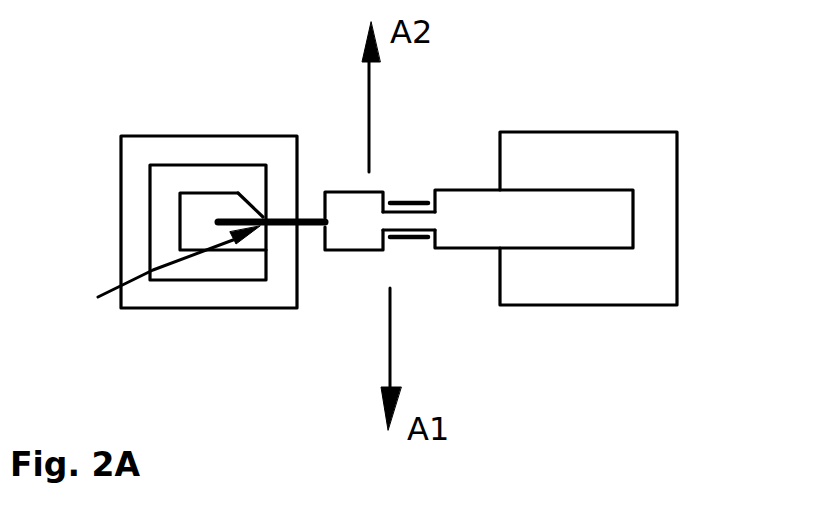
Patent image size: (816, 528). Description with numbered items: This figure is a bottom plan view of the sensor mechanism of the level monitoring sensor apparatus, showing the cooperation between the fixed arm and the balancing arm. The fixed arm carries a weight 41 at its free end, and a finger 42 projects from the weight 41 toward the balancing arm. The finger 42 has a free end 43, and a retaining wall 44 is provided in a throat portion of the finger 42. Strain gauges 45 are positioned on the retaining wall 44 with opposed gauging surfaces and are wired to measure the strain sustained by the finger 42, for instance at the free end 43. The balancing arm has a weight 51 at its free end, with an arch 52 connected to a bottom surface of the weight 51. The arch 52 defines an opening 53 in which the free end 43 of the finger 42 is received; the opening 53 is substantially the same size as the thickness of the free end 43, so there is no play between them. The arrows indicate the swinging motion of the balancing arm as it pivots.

The weight 41 is at (578, 153).
The finger 42 is at (466, 200).
The free end 43 is at (226, 220).
The retaining wall 44 is at (393, 220).
The strain gauges 45 is at (410, 202).
The weight 51 is at (180, 148).
The arch 52 is at (213, 265).
The opening 53 is at (156, 284).